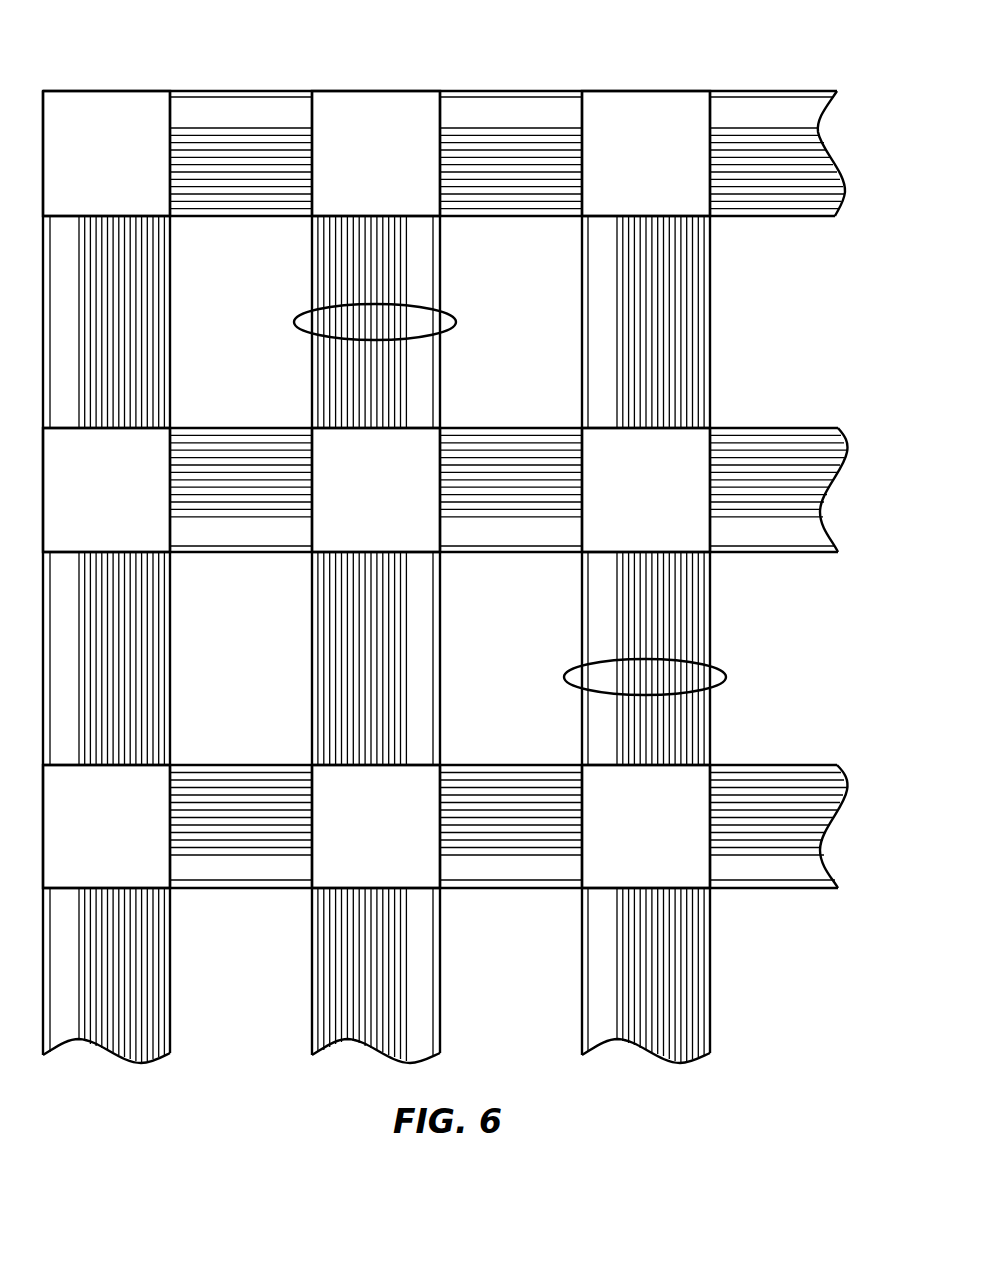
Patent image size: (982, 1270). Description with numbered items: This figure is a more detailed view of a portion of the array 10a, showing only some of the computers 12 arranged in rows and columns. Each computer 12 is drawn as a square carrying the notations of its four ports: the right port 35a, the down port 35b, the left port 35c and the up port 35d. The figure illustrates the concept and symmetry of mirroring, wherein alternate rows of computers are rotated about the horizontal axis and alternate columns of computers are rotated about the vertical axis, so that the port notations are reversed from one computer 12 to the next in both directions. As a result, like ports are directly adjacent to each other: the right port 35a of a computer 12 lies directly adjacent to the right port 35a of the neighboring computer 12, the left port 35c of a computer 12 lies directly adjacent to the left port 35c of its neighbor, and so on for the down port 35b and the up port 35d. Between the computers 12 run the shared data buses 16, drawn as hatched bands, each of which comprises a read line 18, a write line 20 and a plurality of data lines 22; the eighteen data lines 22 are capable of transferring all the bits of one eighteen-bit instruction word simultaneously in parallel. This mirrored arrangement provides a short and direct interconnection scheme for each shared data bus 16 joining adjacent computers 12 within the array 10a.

The array 10a is at (407, 78).
The computer 12 is at (137, 91).
The data bus 16 is at (456, 310).
The read line 18 is at (547, 553).
The write line 20 is at (453, 547).
The data lines 22 is at (505, 487).
The right port 35a is at (706, 839).
The down port 35b is at (665, 791).
The left port 35c is at (631, 839).
The up port 35d is at (665, 882).